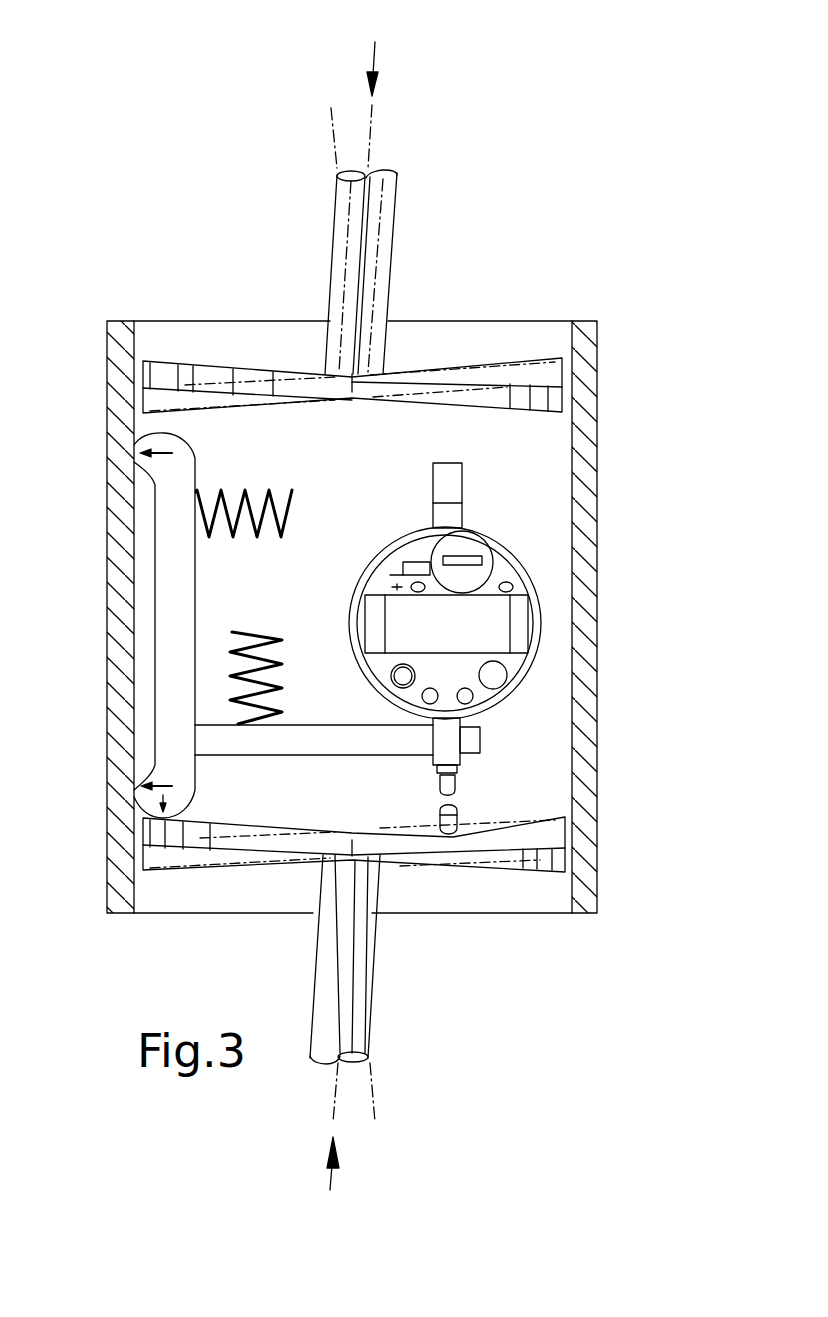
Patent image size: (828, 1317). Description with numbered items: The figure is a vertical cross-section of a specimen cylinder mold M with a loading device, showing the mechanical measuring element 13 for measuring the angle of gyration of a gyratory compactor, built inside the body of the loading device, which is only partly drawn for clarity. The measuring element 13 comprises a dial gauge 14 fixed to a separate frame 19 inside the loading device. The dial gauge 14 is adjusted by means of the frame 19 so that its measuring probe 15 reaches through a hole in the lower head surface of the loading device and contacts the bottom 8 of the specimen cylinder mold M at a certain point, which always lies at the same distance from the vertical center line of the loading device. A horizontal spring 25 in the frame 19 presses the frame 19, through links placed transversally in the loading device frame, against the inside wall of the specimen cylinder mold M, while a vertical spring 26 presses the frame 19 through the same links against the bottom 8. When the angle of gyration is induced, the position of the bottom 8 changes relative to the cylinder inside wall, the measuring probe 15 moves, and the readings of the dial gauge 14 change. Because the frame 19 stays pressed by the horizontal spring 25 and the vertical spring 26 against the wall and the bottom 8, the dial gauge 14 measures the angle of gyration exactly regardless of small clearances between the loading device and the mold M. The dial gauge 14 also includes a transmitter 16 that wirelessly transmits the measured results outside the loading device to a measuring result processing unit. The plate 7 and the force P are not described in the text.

The upper plate 7 is at (487, 393).
The bottom 8 is at (228, 833).
The mechanical measuring element 13 is at (625, 745).
The dial gauge 14 is at (507, 629).
The measuring probe 15 is at (458, 828).
The transmitter 16 is at (492, 623).
The frame 19 is at (173, 518).
The horizontal spring 25 is at (247, 535).
The vertical spring 26 is at (237, 665).
The specimen cylinder mold M is at (584, 456).
The force P is at (353, 618).